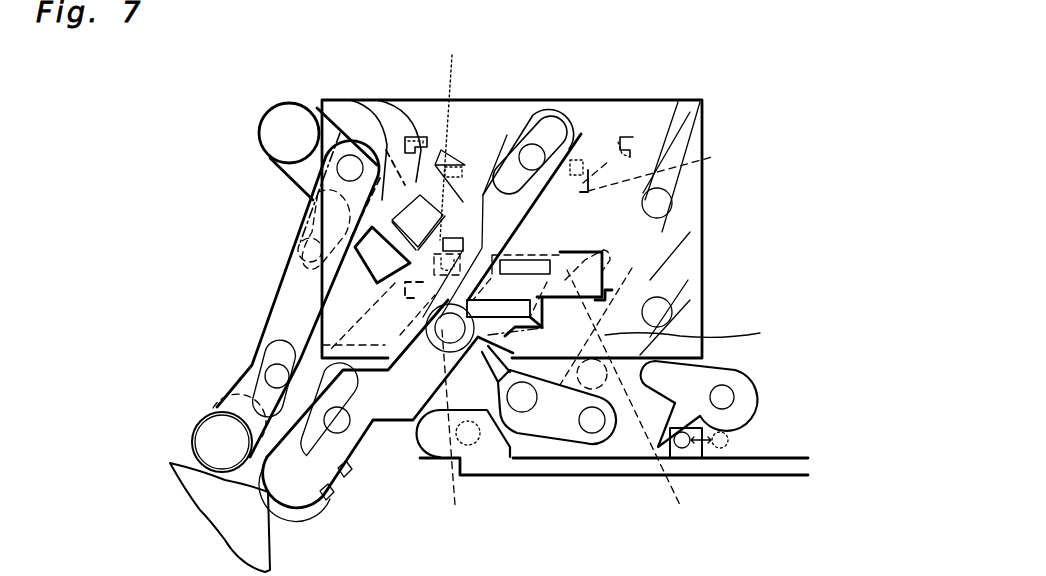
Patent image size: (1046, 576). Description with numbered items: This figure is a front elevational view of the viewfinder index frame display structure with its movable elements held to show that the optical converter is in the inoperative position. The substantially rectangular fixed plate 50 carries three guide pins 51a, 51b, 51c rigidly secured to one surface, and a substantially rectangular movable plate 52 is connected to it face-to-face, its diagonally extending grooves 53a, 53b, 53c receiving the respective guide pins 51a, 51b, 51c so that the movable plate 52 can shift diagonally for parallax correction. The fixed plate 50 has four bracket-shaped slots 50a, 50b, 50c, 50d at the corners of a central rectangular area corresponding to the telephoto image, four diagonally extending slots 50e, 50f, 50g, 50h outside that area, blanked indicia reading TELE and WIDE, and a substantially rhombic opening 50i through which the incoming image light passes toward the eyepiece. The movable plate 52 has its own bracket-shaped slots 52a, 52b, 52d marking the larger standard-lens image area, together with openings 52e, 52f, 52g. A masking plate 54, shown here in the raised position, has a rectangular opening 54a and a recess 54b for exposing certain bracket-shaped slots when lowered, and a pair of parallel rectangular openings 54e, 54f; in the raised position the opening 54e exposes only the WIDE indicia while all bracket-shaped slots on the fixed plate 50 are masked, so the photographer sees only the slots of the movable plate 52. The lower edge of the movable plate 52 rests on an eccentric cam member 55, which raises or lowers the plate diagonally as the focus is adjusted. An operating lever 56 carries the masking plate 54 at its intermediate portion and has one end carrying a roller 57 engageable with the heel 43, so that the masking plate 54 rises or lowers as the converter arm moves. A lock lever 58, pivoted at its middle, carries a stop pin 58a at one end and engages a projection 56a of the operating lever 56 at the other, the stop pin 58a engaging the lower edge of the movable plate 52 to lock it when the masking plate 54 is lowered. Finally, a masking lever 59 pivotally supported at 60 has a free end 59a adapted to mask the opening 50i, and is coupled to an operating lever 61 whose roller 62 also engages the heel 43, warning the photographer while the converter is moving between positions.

The heel 43 is at (248, 525).
The fixed plate 50 is at (688, 120).
The bracket-shaped slot 50a is at (583, 160).
The bracket-shaped slot 50b is at (605, 254).
The bracket-shaped slot 50c is at (442, 340).
The bracket-shaped slot 50d is at (456, 132).
The diagonally extending slot 50e is at (612, 143).
The diagonally extending slot 50f is at (706, 326).
The diagonally extending slot 50g is at (365, 345).
The diagonally extending slot 50h is at (360, 100).
The rhombic opening 50i is at (435, 160).
The guide pin 51a is at (660, 203).
The guide pin 51b is at (660, 312).
The guide pin 51c is at (298, 250).
The movable plate 52 is at (670, 118).
The bracket-shaped slot 52a is at (627, 137).
The bracket-shaped slot 52b is at (680, 290).
The bracket-shaped slot 52d is at (420, 140).
The opening 52e is at (712, 157).
The opening 52f is at (627, 398).
The opening 52g is at (466, 429).
The groove 53a is at (680, 152).
The groove 53b is at (685, 240).
The groove 53c is at (323, 217).
The masking plate 54 is at (590, 120).
The rectangular opening 54a is at (463, 245).
The recess 54b is at (590, 192).
The rectangular opening 54e is at (529, 262).
The rectangular opening 54f is at (513, 353).
The eccentric cam member 55 is at (710, 364).
The operating lever 56 is at (400, 403).
The projection 56a is at (487, 357).
The roller 57 is at (285, 500).
The lock lever 58 is at (555, 425).
The stop pin 58a is at (598, 430).
The masking lever 59 is at (327, 110).
The free end 59a is at (375, 258).
The pivot 60 is at (272, 118).
The operating lever 61 is at (296, 270).
The roller 62 is at (193, 423).